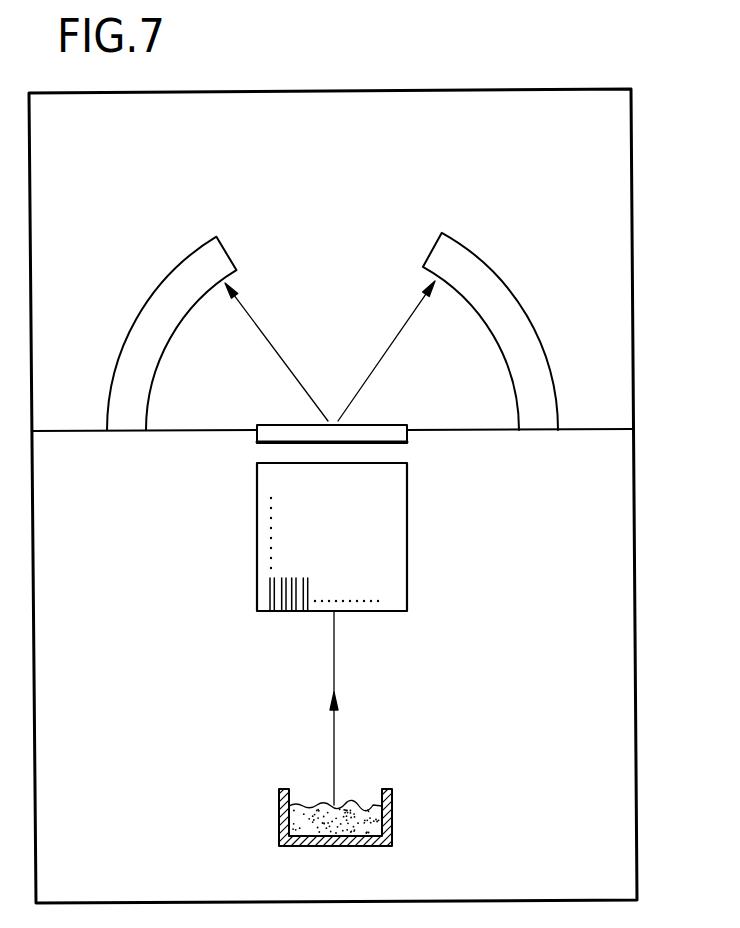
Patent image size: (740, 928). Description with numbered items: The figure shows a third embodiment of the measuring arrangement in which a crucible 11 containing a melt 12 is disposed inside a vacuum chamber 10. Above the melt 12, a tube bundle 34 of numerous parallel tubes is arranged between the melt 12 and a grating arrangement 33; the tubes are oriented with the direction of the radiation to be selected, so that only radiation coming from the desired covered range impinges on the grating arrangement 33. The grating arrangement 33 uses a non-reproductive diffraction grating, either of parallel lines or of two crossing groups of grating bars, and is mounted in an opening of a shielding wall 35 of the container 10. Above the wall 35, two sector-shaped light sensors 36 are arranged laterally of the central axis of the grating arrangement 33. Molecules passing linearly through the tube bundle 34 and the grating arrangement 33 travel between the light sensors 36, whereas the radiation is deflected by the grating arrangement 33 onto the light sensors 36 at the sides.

The vacuum chamber 10 is at (634, 522).
The crucible 11 is at (392, 815).
The melt 12 is at (355, 805).
The grating arrangement 33 is at (263, 442).
The tube bundle 34 is at (400, 575).
The shielding wall 35 is at (590, 431).
The light sensors 36 is at (192, 269).